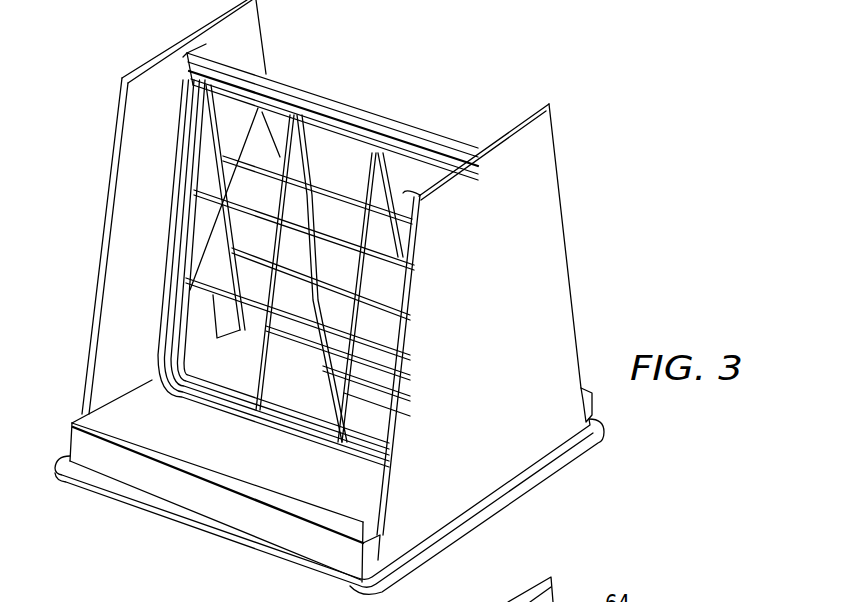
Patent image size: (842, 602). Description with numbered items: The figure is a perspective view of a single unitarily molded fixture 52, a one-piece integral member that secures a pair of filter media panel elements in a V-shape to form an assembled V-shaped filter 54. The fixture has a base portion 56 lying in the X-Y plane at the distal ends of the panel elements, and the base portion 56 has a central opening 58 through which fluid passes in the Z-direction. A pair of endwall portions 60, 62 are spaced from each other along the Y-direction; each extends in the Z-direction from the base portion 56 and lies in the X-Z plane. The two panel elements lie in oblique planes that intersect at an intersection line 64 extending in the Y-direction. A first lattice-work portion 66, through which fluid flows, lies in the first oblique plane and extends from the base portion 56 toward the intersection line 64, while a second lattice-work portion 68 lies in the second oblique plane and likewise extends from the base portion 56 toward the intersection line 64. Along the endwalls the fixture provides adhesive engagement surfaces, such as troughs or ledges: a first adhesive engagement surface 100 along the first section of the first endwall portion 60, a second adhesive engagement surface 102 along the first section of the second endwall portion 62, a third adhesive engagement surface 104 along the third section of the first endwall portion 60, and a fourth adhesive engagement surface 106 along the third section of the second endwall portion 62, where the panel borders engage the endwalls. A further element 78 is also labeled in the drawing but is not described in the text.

The fixture 52 is at (660, 137).
The V-shaped filter 54 is at (728, 601).
The base portion 56 is at (93, 485).
The central opening 58 is at (305, 408).
The first endwall portion 60 is at (520, 313).
The second endwall portion 62 is at (107, 215).
The intersection line 64 is at (307, 88).
The first lattice-work portion 66 is at (353, 275).
The second lattice-work portion 68 is at (384, 280).
The tab 78 is at (552, 580).
The first adhesive engagement surface 100 is at (422, 195).
The second adhesive engagement surface 102 is at (187, 185).
The third adhesive engagement surface 104 is at (498, 140).
The fourth adhesive engagement surface 106 is at (213, 133).